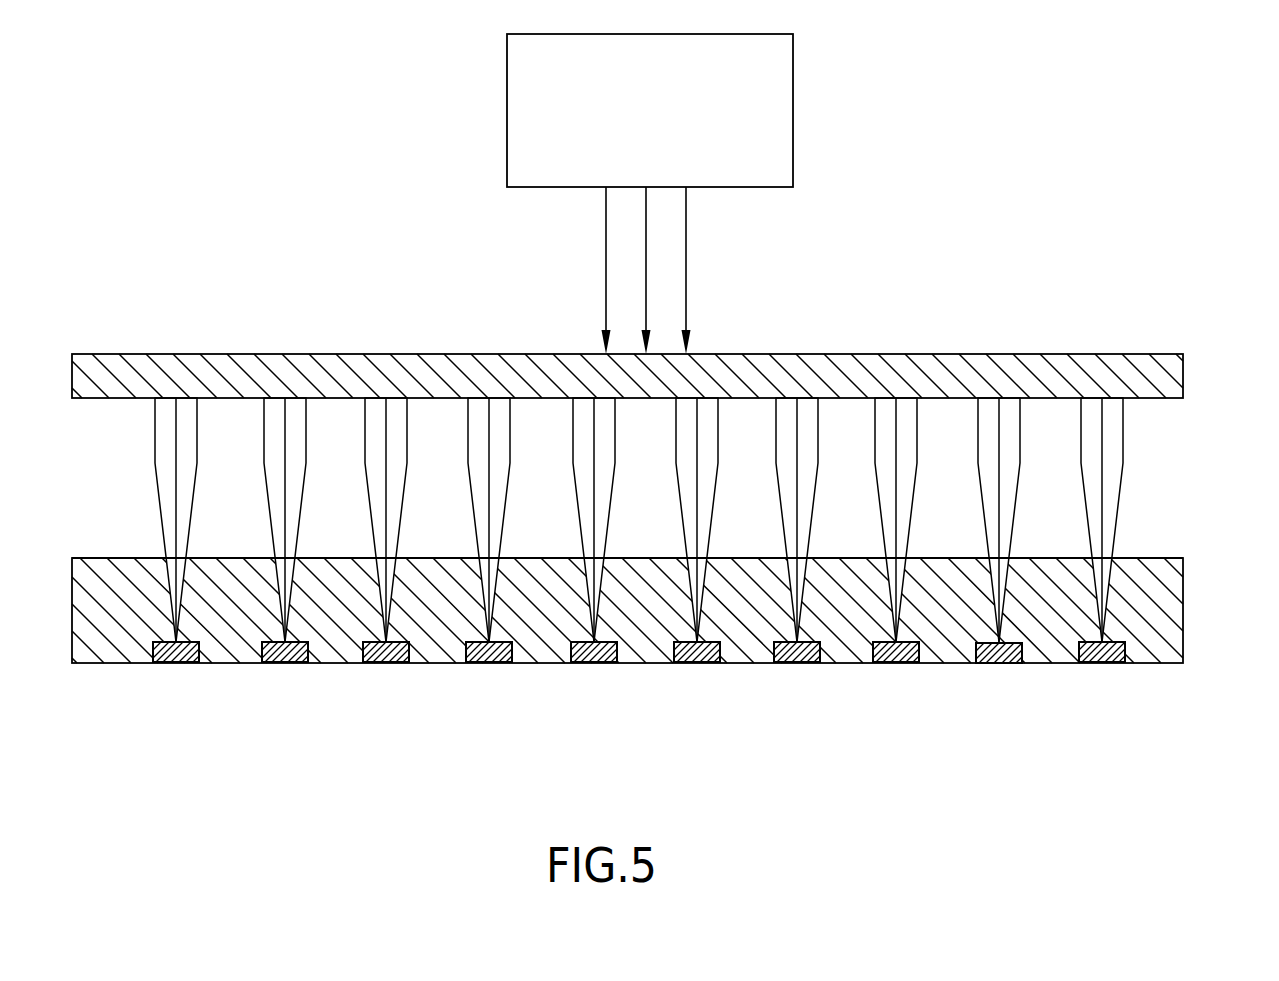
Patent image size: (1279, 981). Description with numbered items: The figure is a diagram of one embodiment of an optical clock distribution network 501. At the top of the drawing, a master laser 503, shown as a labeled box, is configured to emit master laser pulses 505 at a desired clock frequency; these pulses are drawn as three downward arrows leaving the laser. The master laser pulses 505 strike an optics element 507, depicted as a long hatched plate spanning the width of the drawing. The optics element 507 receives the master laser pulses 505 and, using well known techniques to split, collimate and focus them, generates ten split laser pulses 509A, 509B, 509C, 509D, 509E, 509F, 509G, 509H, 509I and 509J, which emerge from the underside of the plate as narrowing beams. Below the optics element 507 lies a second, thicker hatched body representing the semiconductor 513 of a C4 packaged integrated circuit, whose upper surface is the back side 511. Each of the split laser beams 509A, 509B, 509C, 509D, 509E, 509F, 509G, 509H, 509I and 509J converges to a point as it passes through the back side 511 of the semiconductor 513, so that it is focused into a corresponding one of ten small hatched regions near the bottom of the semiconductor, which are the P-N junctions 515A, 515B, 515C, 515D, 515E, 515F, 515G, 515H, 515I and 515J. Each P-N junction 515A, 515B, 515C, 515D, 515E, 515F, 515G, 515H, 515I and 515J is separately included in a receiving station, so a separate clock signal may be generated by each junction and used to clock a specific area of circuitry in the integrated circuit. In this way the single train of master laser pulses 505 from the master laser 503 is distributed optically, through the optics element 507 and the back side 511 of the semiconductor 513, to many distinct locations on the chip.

The optical clock distribution network 501 is at (1148, 73).
The master laser 503 is at (793, 115).
The master laser pulses 505 is at (686, 277).
The optics element 507 is at (1088, 357).
The split laser pulse 509A is at (152, 455).
The split laser pulse 509B is at (261, 455).
The split laser pulse 509C is at (362, 455).
The split laser pulse 509D is at (465, 455).
The split laser pulse 509E is at (570, 455).
The split laser pulse 509F is at (673, 455).
The split laser pulse 509G is at (773, 455).
The split laser pulse 509H is at (872, 455).
The split laser pulse 509I is at (975, 455).
The split laser pulse 509J is at (1078, 455).
The back side 511 is at (1160, 558).
The semiconductor 513 is at (1183, 627).
The P-N junction 515A is at (160, 668).
The P-N junction 515B is at (266, 668).
The P-N junction 515C is at (376, 668).
The P-N junction 515D is at (485, 668).
The P-N junction 515E is at (591, 668).
The P-N junction 515F is at (698, 668).
The P-N junction 515G is at (796, 668).
The P-N junction 515H is at (900, 668).
The P-N junction 515I is at (1000, 668).
The P-N junction 515J is at (1113, 668).